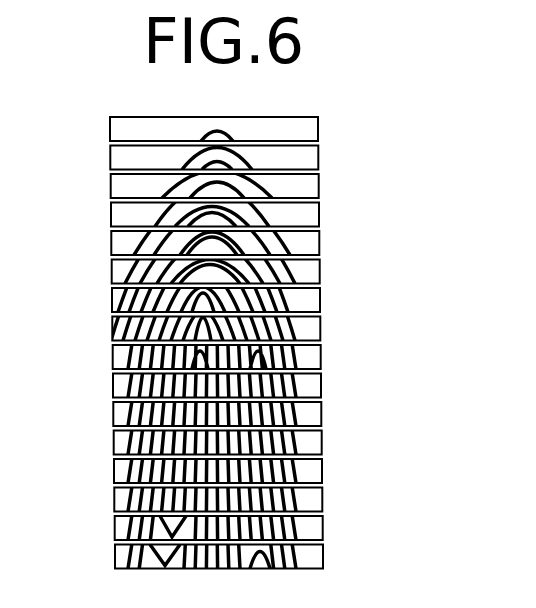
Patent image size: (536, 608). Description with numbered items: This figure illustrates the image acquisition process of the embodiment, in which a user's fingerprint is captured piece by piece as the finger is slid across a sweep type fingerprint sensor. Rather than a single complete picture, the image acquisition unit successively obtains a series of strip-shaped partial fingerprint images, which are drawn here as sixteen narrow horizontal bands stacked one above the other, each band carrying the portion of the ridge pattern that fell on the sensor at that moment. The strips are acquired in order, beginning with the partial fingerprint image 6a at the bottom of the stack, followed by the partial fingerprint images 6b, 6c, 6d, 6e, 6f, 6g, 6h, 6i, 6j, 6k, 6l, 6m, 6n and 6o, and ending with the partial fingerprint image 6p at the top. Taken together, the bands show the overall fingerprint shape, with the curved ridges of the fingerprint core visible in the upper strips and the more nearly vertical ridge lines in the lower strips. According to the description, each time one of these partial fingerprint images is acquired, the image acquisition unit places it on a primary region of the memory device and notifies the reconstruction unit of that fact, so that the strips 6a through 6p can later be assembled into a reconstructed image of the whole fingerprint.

The partial fingerprint image 6a is at (323, 558).
The partial fingerprint image 6b is at (323, 520).
The partial fingerprint image 6c is at (113, 503).
The partial fingerprint image 6d is at (113, 477).
The partial fingerprint image 6e is at (113, 442).
The partial fingerprint image 6f is at (113, 413).
The partial fingerprint image 6g is at (320, 390).
The partial fingerprint image 6h is at (320, 357).
The partial fingerprint image 6i is at (320, 325).
The partial fingerprint image 6j is at (320, 293).
The partial fingerprint image 6k is at (318, 268).
The partial fingerprint image 6l is at (317, 233).
The partial fingerprint image 6m is at (317, 212).
The partial fingerprint image 6n is at (317, 180).
The partial fingerprint image 6o is at (317, 157).
The partial fingerprint image 6p is at (317, 124).